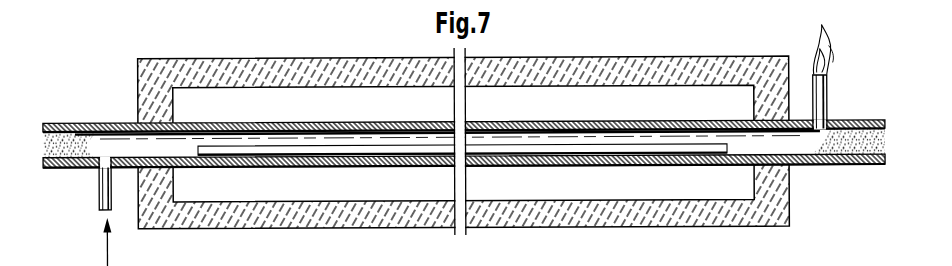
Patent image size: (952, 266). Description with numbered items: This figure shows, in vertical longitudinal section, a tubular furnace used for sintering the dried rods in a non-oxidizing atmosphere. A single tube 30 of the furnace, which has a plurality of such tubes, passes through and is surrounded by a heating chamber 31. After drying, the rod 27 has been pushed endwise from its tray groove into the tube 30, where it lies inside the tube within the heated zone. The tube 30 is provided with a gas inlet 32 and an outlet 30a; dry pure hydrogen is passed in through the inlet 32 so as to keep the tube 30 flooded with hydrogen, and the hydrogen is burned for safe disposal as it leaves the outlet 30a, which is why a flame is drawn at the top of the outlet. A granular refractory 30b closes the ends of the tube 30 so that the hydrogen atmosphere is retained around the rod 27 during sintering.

The rod 27 is at (400, 145).
The tube 30 is at (328, 122).
The outlet 30a is at (827, 91).
The granular refractory 30b is at (81, 88).
The heating chamber 31 is at (268, 200).
The gas inlet 32 is at (99, 197).